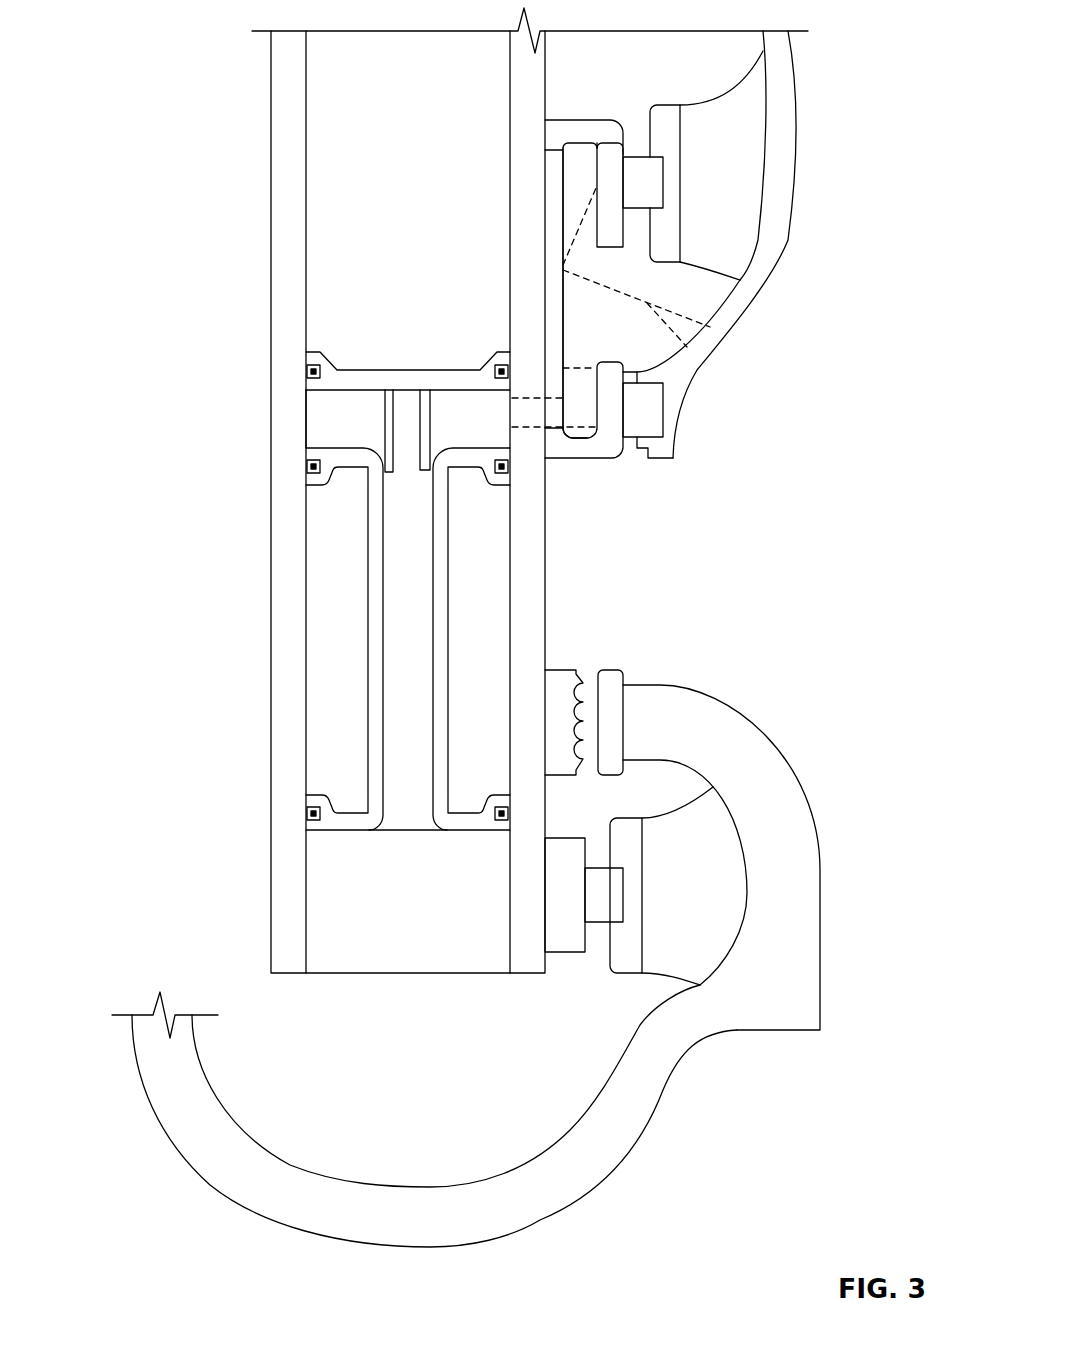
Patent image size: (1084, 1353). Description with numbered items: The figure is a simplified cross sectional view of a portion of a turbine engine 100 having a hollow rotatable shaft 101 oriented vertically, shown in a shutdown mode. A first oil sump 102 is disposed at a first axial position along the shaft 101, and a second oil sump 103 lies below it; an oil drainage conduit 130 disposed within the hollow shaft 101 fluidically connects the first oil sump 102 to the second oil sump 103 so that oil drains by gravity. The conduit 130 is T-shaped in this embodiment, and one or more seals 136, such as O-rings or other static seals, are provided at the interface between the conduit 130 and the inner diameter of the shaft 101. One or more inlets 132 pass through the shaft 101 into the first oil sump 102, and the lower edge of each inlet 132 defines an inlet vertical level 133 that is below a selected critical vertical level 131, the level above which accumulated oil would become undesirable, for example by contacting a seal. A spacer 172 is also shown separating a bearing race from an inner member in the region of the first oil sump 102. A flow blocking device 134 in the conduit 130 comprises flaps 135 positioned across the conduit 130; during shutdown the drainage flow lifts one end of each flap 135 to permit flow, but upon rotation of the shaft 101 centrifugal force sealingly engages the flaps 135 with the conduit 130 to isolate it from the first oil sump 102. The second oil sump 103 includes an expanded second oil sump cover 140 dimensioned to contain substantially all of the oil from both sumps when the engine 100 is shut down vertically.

The turbine engine 100 is at (168, 64).
The rotatable shaft 101 is at (282, 118).
The first oil sump 102 is at (731, 50).
The second oil sump 103 is at (669, 798).
The oil drainage conduit 130 is at (403, 355).
The selected critical vertical level 131 is at (592, 362).
The inlets 132 is at (527, 386).
The inlet vertical level 133 is at (581, 450).
The flow blocking device 134 is at (360, 409).
The flaps 135 is at (389, 440).
The seals 136 is at (315, 362).
The expanded second oil sump cover 140 is at (617, 1161).
The spacer 172 is at (555, 208).